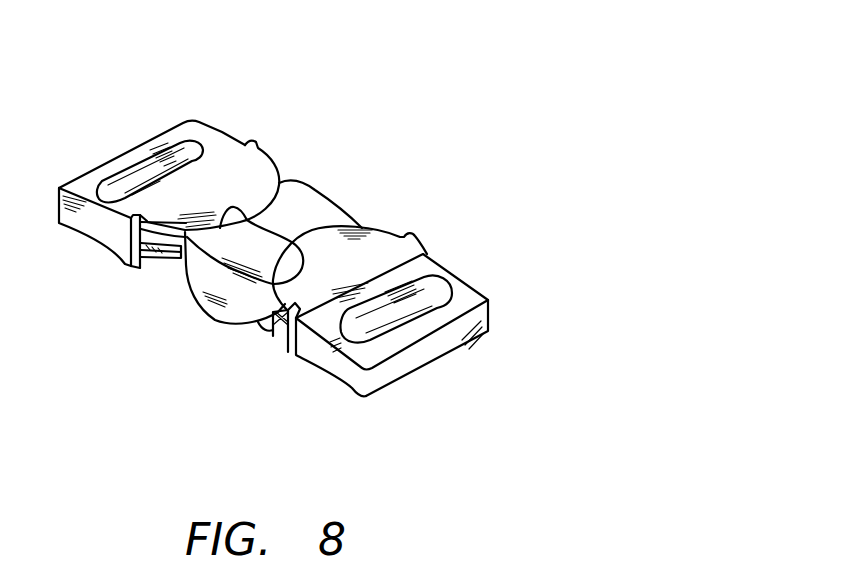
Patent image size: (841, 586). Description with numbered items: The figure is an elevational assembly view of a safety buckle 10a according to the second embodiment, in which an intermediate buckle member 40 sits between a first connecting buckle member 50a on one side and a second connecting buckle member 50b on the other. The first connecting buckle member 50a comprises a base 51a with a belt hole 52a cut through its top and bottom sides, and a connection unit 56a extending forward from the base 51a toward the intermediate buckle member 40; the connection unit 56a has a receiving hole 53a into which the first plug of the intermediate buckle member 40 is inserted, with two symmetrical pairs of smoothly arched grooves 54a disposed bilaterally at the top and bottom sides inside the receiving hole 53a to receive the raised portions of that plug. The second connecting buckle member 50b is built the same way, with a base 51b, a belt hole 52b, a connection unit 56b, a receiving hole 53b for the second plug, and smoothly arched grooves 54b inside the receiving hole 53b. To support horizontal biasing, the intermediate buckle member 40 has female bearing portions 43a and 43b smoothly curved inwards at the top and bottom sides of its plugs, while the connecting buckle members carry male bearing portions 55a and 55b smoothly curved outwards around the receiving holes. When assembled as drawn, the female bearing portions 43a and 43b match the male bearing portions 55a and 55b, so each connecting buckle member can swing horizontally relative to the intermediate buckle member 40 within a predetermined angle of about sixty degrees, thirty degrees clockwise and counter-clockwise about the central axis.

The safety buckle 10a is at (422, 134).
The intermediate buckle member 40 is at (336, 194).
The female bearing portion 43a is at (225, 213).
The female bearing portion 43b is at (303, 243).
The first connecting buckle member 50a is at (218, 131).
The second connecting buckle member 50b is at (466, 270).
The base 51a is at (85, 223).
The base 51b is at (350, 373).
The belt hole 52a is at (151, 168).
The belt hole 52b is at (400, 330).
The receiving hole 53a is at (149, 253).
The receiving hole 53b is at (332, 265).
The smoothly arched grooves 54a is at (173, 258).
The smoothly arched grooves 54b is at (288, 334).
The male bearing portion 55a is at (294, 180).
The male bearing portion 55b is at (343, 220).
The connection unit 56a is at (248, 167).
The connection unit 56b is at (380, 243).